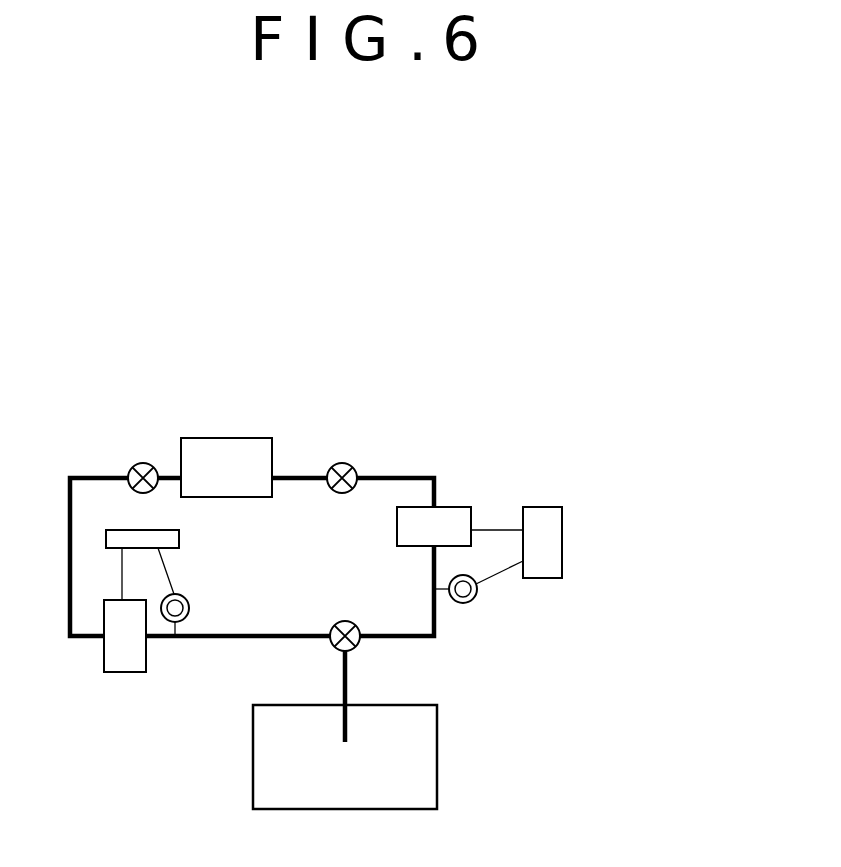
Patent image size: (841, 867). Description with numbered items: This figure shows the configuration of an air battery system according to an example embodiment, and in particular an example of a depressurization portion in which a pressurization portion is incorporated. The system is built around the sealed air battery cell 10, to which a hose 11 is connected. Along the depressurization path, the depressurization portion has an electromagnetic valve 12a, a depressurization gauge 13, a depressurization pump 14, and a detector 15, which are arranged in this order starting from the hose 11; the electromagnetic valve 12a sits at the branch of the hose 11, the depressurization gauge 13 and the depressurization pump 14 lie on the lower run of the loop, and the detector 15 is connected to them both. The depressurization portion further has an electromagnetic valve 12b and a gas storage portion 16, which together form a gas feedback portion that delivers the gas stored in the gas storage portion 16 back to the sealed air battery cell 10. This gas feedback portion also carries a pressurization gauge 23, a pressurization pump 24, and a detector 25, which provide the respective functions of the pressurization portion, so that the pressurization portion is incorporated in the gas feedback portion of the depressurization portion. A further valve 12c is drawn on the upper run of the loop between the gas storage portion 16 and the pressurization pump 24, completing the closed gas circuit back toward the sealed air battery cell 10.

The sealed air battery cell 10 is at (437, 817).
The hose 11 is at (345, 727).
The electromagnetic valve 12a is at (336, 625).
The electromagnetic valve 12b is at (132, 468).
The valve 12c is at (346, 466).
The depressurization gauge 13 is at (178, 611).
The depressurization pump 14 is at (124, 662).
The detector 15 is at (137, 540).
The gas storage portion 16 is at (225, 455).
The pressurization gauge 23 is at (462, 592).
The pressurization pump 24 is at (459, 520).
The detector 25 is at (553, 545).